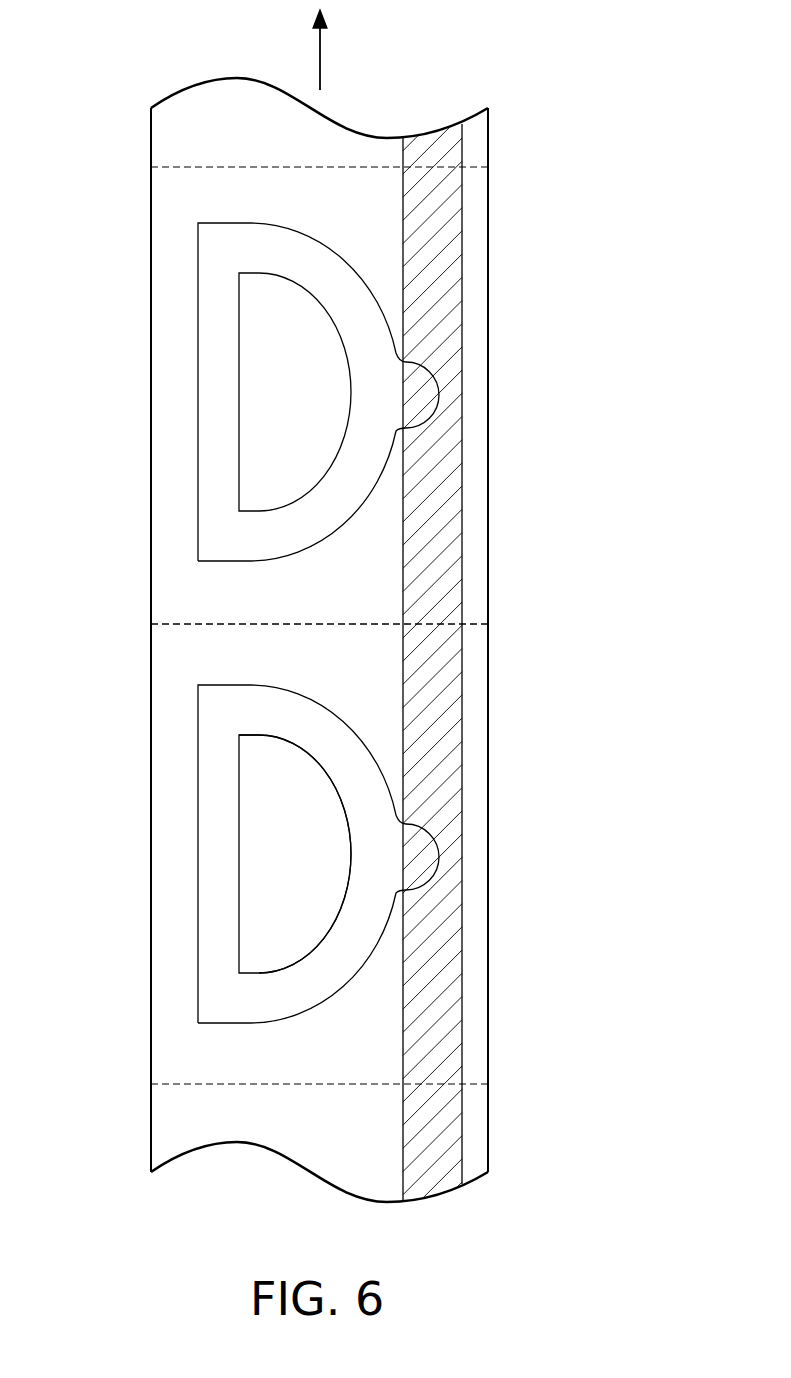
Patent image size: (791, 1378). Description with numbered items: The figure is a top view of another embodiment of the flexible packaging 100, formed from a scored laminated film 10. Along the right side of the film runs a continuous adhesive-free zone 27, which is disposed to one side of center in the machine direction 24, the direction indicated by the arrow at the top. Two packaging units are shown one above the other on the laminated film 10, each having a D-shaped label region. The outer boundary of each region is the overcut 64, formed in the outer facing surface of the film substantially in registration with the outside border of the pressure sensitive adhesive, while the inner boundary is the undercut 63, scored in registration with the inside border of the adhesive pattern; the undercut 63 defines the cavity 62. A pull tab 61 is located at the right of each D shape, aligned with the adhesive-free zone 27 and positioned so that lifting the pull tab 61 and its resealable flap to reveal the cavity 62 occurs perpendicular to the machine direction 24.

The laminated film 10 is at (183, 693).
The machine direction 24 is at (320, 53).
The adhesive-free zone 27 is at (443, 185).
The pull tab 61 is at (415, 392).
The cavity 62 is at (262, 397).
The undercut 63 is at (239, 783).
The overcut 64 is at (198, 953).
The flexible packaging 100 is at (180, 223).